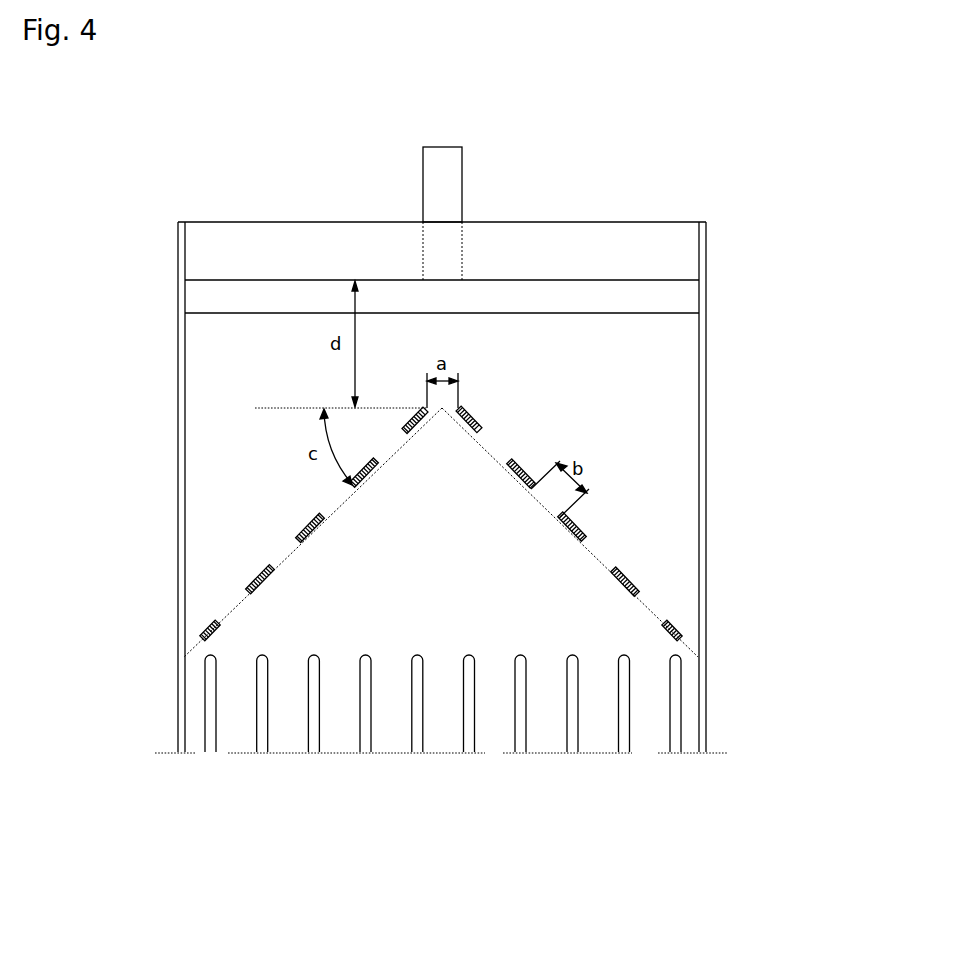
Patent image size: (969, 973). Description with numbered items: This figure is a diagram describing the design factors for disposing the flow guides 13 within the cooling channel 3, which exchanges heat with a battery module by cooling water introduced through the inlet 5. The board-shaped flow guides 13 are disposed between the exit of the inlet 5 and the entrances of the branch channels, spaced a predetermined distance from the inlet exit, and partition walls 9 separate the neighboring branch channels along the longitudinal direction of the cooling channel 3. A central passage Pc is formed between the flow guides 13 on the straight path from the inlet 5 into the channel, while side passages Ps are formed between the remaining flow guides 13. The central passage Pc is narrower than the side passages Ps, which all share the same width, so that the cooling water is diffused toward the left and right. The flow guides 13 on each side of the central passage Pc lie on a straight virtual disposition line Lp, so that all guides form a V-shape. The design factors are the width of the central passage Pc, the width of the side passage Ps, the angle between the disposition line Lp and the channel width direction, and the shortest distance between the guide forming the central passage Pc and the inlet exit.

The cooling channel 3 is at (716, 421).
The inlet 5 is at (462, 182).
The partition wall 9 is at (368, 754).
The flow guide 13 is at (584, 531).
The disposition line Lp is at (227, 613).
The side passage Ps is at (348, 500).
The central passage Pc is at (448, 397).